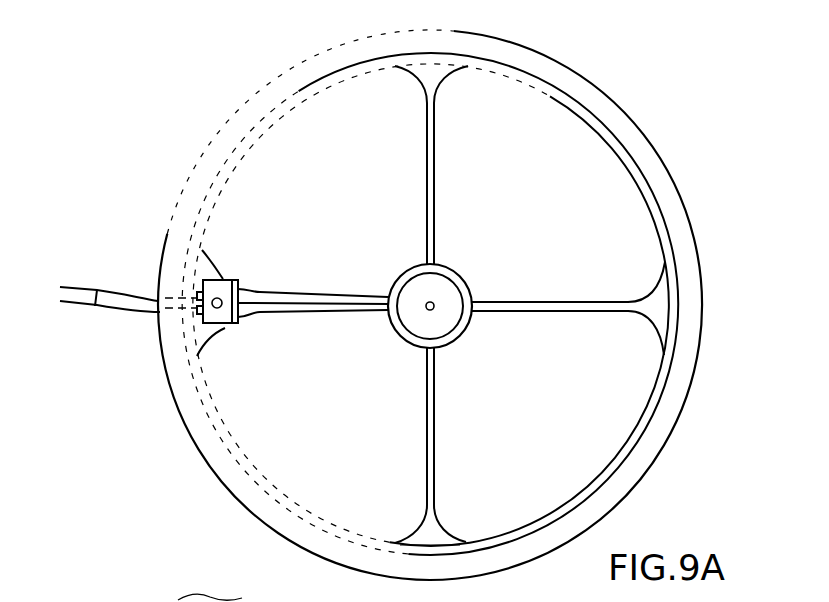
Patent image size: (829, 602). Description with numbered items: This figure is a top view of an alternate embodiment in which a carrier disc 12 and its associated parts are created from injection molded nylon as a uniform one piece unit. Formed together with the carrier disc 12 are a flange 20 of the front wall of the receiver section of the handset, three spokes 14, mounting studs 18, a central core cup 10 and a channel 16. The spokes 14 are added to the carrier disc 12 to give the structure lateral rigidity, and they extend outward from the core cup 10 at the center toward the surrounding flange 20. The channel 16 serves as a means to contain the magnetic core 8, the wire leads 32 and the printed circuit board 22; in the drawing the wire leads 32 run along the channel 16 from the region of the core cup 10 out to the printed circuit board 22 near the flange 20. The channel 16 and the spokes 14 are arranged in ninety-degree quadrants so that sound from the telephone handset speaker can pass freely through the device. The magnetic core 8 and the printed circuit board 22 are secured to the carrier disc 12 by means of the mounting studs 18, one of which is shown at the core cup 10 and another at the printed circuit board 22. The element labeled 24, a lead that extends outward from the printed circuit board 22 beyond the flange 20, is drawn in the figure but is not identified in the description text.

The magnetic core 8 is at (462, 330).
The core cup 10 is at (403, 278).
The carrier disc 12 is at (680, 318).
The spokes 14 is at (437, 203).
The channel 16 is at (355, 315).
The mounting studs 18 is at (432, 305).
The flange 20 is at (647, 473).
The printed circuit board 22 is at (217, 282).
The cable 24 is at (80, 305).
The wire leads 32 is at (300, 292).